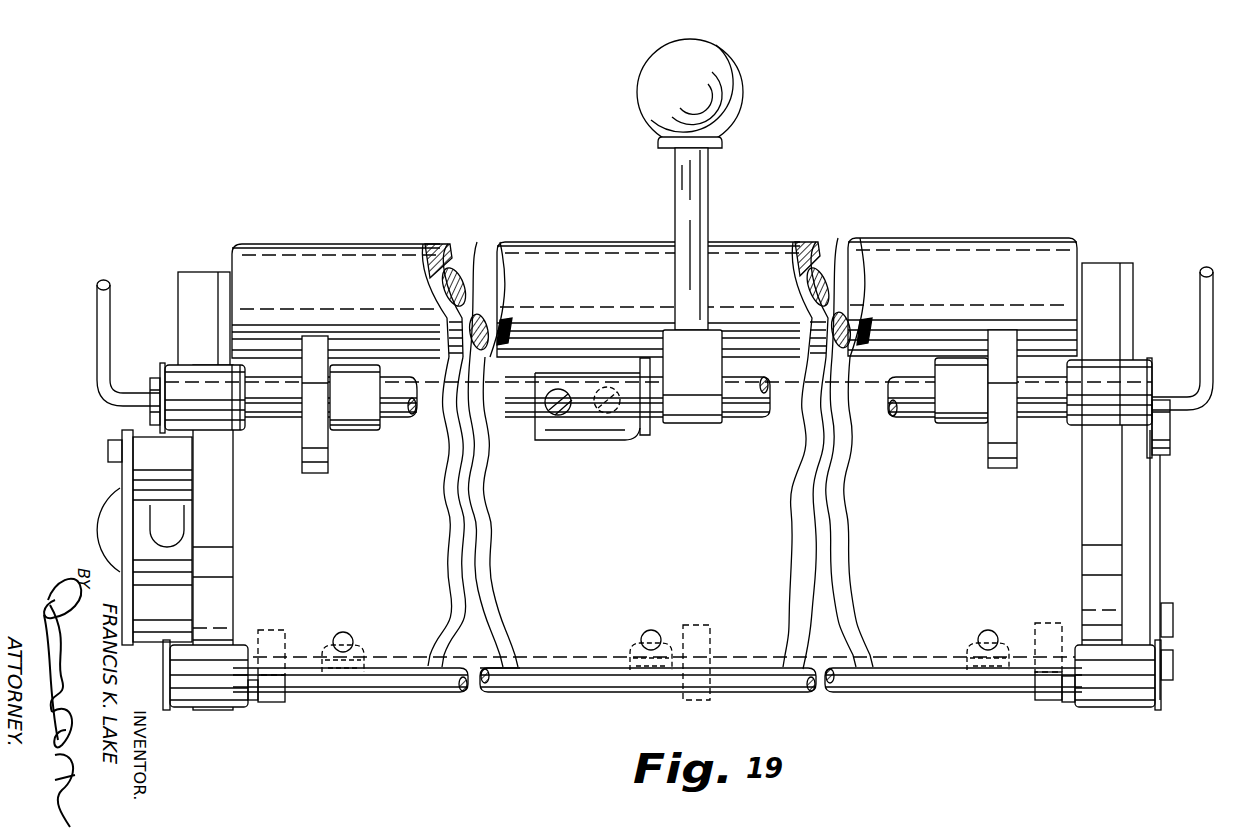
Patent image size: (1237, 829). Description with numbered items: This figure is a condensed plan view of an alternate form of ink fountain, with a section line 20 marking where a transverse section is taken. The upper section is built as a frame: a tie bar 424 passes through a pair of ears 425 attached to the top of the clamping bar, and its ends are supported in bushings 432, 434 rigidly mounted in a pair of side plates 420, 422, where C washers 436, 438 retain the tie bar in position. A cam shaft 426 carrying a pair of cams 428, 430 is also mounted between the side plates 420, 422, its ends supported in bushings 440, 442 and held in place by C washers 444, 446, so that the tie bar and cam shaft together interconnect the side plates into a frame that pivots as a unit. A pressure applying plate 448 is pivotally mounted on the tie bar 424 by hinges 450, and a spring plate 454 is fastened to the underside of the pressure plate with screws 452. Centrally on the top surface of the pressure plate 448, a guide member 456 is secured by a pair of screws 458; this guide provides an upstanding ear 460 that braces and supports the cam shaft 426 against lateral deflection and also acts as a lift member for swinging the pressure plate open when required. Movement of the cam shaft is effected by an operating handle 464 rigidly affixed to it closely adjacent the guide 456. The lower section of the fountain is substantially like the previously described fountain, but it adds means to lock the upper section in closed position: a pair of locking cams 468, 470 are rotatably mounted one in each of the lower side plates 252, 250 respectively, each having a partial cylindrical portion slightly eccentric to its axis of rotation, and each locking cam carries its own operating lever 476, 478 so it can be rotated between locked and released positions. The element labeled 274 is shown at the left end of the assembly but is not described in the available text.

The section line 20- 20 is at (905, 232).
The side plate 250 is at (178, 280).
The side plate 252 is at (1133, 276).
The cam member 274 is at (150, 532).
The side plate 420 is at (190, 527).
The side plate 422 is at (1140, 506).
The tie bar 424 is at (550, 690).
The ears 425 is at (268, 702).
The cam shaft 426 is at (742, 412).
The cam 428 is at (328, 460).
The cam 430 is at (985, 455).
The bushing 432 is at (225, 708).
The bushing 434 is at (1095, 708).
The C washer 436 is at (166, 712).
The C washer 438 is at (1161, 696).
The bushing 440 is at (243, 428).
The bushing 442 is at (1065, 426).
The C washer 444 is at (162, 368).
The C washer 446 is at (1152, 365).
The pressure applying plate 448 is at (658, 520).
The hinges 450 is at (285, 700).
The screws 452 is at (346, 634).
The spring plate 454 is at (510, 692).
The guide member 456 is at (630, 440).
The screws 458 is at (605, 412).
The upstanding ear 460 is at (650, 422).
The operating handle 464 is at (707, 173).
The locking cam 468 is at (150, 428).
The locking cam 470 is at (1170, 432).
The operating lever 476 is at (96, 328).
The operating lever 478 is at (1200, 318).